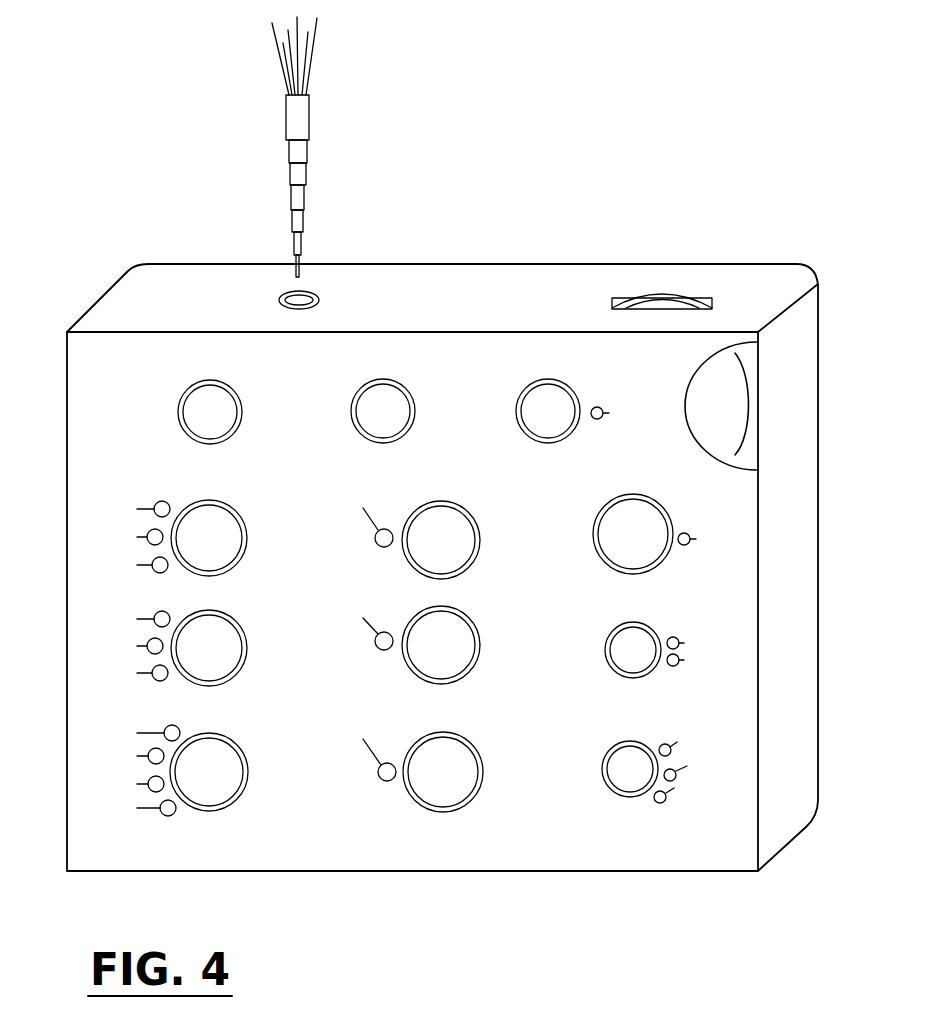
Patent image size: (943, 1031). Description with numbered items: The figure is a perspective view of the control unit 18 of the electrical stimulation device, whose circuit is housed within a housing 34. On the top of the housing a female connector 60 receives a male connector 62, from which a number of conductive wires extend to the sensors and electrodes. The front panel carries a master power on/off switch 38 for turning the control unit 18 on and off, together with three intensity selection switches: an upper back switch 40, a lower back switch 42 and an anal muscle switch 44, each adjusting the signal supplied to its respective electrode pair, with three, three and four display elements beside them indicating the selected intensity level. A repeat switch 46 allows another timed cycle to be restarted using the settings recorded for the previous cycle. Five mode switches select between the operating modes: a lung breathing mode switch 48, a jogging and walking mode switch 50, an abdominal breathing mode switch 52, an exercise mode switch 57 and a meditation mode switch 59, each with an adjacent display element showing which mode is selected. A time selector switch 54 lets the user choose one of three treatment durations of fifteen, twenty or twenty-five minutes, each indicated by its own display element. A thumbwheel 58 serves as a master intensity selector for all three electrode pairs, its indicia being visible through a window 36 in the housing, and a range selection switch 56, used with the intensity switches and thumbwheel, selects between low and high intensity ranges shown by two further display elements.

The control unit 18 is at (543, 196).
The housing 34 is at (365, 264).
The window 36 is at (751, 410).
The master power on/off switch 38 is at (212, 379).
The upper back switch 40 is at (236, 517).
The lower back switch 42 is at (236, 628).
The anal muscle switch 44 is at (238, 750).
The repeat switch 46 is at (385, 380).
The lung breathing mode switch 48 is at (478, 528).
The jogging and walking mode switch 50 is at (478, 640).
The abdominal breathing mode switch 52 is at (480, 758).
The time selector switch 54 is at (610, 749).
The range selection switch 56 is at (613, 630).
The exercise mode switch 57 is at (605, 506).
The thumbwheel 58 is at (659, 305).
The meditation mode switch 59 is at (550, 380).
The female connector 60 is at (319, 298).
The male connector 62 is at (309, 116).